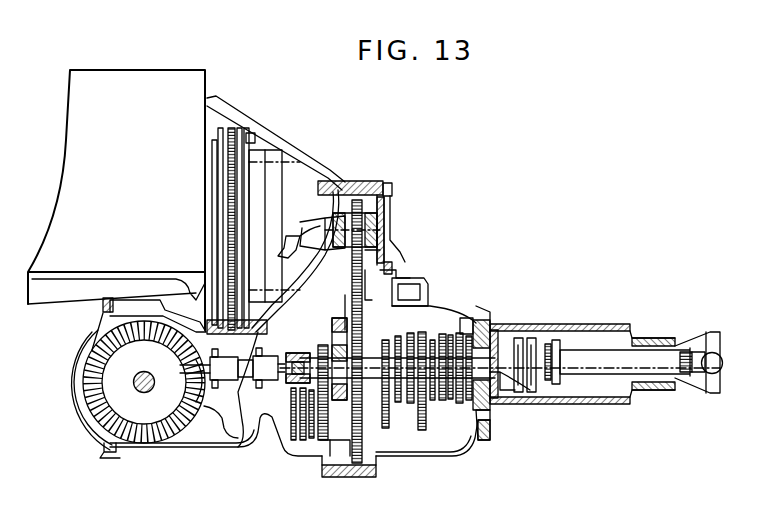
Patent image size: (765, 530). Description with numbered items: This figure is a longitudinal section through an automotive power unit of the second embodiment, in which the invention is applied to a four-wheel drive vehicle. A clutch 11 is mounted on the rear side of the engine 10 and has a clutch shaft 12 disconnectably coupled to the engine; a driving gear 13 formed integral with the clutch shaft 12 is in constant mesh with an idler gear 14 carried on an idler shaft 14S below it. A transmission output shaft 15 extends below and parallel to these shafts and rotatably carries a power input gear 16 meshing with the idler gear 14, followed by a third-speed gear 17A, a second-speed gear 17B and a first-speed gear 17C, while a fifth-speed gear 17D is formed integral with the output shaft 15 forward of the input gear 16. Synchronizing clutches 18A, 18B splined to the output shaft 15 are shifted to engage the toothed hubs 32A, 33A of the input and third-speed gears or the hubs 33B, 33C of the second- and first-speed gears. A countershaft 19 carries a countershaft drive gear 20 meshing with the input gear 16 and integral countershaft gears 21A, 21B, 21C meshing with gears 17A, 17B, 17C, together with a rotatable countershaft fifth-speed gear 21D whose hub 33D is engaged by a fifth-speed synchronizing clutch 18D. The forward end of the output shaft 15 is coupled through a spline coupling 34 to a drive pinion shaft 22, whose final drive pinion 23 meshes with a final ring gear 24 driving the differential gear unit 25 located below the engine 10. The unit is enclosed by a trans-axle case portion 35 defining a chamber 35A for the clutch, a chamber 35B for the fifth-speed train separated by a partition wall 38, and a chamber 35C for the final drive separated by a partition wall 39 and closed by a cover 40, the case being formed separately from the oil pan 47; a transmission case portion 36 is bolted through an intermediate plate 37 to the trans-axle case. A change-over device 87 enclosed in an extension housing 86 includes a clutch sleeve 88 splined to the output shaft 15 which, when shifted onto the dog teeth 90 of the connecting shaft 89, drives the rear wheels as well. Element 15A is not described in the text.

The engine 10 is at (172, 79).
The clutch 11 is at (260, 140).
The clutch shaft 12 is at (316, 232).
The driving gear 13 is at (345, 190).
The idler gear 14 is at (385, 263).
The idler shaft 14S is at (396, 281).
The transmission output shaft 15 is at (333, 350).
The bracket 15A is at (428, 295).
The power input gear 16 is at (364, 346).
The third-speed gear 17A is at (474, 332).
The second-speed gear 17B is at (470, 318).
The first-speed gear 17C is at (500, 331).
The fifth-speed gear 17D is at (312, 358).
The synchronizing clutch 18A is at (387, 405).
The synchronizing clutch 18B is at (484, 328).
The fifth-speed synchronizing clutch 18D is at (292, 442).
The countershaft 19 is at (437, 405).
The countershaft drive gear 20 is at (378, 468).
The countershaft third-speed gear 21A is at (442, 460).
The countershaft second-speed gear 21B is at (455, 455).
The countershaft first-speed gear 21C is at (500, 402).
The countershaft fifth-speed gear 21D is at (322, 448).
The drive pinion shaft 22 is at (233, 390).
The final drive pinion 23 is at (186, 375).
The final ring gear 24 is at (80, 408).
The differential gear unit 25 is at (144, 452).
The toothed hub 32A is at (420, 305).
The toothed hub 33A is at (411, 430).
The toothed hub 33B is at (478, 455).
The toothed hub 33C is at (480, 447).
The toothed hub 33D is at (303, 447).
The spline coupling 34 is at (268, 386).
The trans-axle case portion 35 is at (318, 163).
The chamber 35A is at (288, 148).
The chamber 35B is at (322, 266).
The chamber 35C is at (185, 448).
The transmission case portion 36 is at (486, 335).
The intermediate plate 37 is at (350, 477).
The partition wall 38 is at (296, 318).
The partition wall 39 is at (196, 421).
The cover 40 is at (80, 359).
The oil pan 47 is at (64, 300).
The extension housing 86 is at (604, 327).
The four-wheel drive change-over device 87 is at (589, 334).
The clutch sleeve 88 is at (532, 396).
The connecting shaft 89 is at (606, 380).
The dog teeth 90 is at (552, 344).